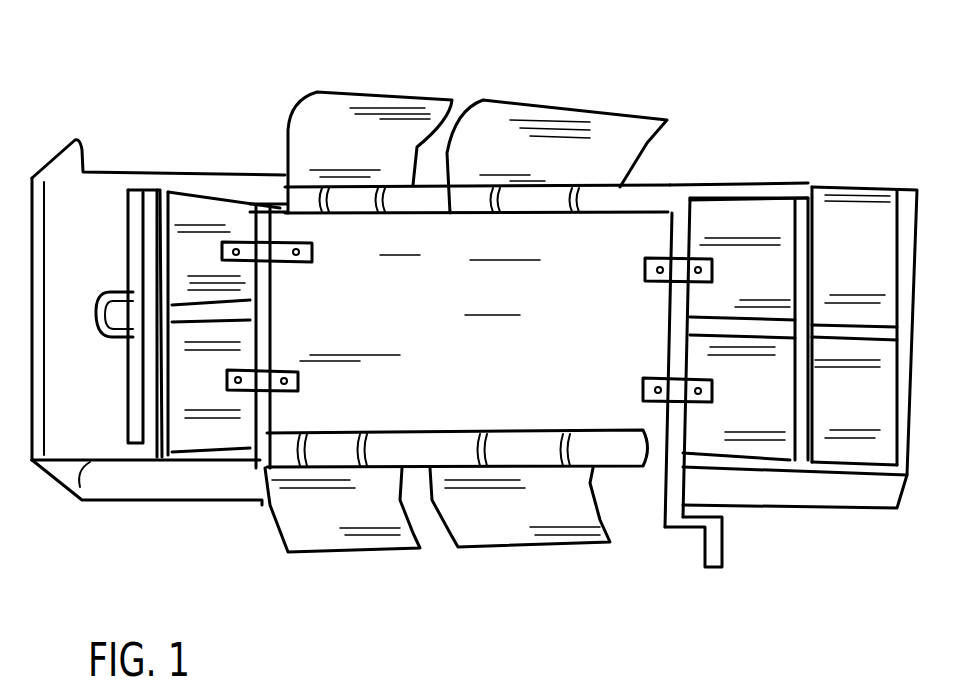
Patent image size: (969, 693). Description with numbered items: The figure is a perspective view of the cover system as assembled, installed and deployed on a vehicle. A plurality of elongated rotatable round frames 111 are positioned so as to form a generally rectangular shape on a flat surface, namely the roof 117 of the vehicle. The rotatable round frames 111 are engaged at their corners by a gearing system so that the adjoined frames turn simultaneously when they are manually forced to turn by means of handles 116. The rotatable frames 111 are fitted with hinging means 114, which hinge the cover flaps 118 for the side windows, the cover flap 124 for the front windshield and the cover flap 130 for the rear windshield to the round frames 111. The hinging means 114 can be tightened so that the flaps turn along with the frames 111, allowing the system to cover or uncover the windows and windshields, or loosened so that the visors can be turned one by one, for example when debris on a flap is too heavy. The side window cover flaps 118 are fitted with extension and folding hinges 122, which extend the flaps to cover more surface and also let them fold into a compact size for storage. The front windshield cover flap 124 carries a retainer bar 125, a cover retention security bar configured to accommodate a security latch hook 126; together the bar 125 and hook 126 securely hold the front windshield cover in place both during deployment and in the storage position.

The elongated rotatable round frame 111 is at (680, 222).
The hinging means 114 is at (700, 412).
The handle 116 is at (720, 575).
The roof of a vehicle 117 is at (393, 393).
The cover flap for side window 118 is at (500, 520).
The extension and folding hinge 122 is at (348, 145).
The cover flap for front windshield 124 is at (204, 213).
The retainer bar 125 is at (134, 193).
The security latch hook 126 is at (107, 355).
The cover flap for rear windshield 130 is at (757, 223).